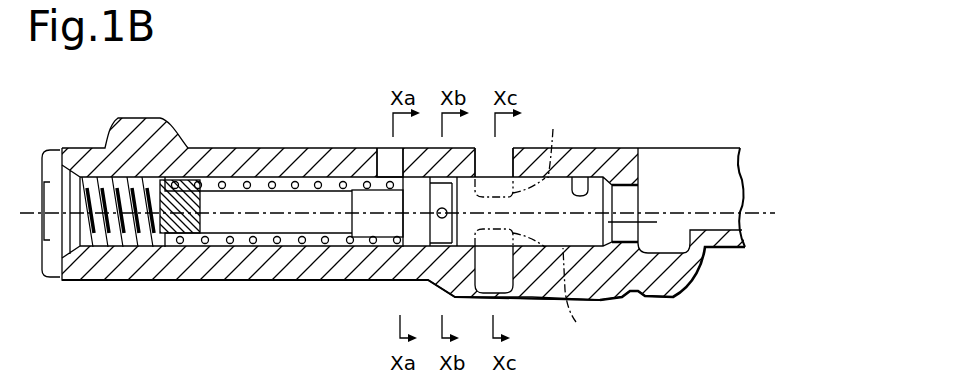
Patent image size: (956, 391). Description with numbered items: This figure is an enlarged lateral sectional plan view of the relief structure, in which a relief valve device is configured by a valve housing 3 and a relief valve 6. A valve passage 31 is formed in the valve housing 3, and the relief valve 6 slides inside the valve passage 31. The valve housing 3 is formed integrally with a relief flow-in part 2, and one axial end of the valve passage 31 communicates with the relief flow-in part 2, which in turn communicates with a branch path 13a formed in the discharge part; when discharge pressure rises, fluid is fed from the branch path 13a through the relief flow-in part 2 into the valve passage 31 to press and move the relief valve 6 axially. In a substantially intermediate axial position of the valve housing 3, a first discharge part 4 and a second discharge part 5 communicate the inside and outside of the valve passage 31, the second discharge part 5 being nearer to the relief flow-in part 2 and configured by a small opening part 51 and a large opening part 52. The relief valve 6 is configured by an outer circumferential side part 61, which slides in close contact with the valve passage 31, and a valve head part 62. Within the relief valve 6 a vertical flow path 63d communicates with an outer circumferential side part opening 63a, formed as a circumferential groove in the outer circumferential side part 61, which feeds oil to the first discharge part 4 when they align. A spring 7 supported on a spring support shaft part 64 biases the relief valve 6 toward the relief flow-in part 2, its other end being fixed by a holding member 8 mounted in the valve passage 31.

The relief flow-in part 2 is at (627, 206).
The valve housing 3 is at (624, 147).
The first discharge part 4 is at (387, 160).
The second discharge part 5 is at (494, 158).
The relief valve 6 is at (583, 230).
The spring 7 is at (280, 243).
The holding member 8 is at (163, 248).
The branch path 13a is at (657, 160).
The valve passage 31 is at (578, 190).
The small opening part 51 is at (574, 225).
The large opening part 52 is at (468, 297).
The outer circumferential side part 61 is at (545, 250).
The valve head part 62 is at (657, 222).
The outer circumferential side part opening 63a is at (445, 182).
The vertical flow path 63d is at (442, 218).
The spring support shaft part 64 is at (352, 205).